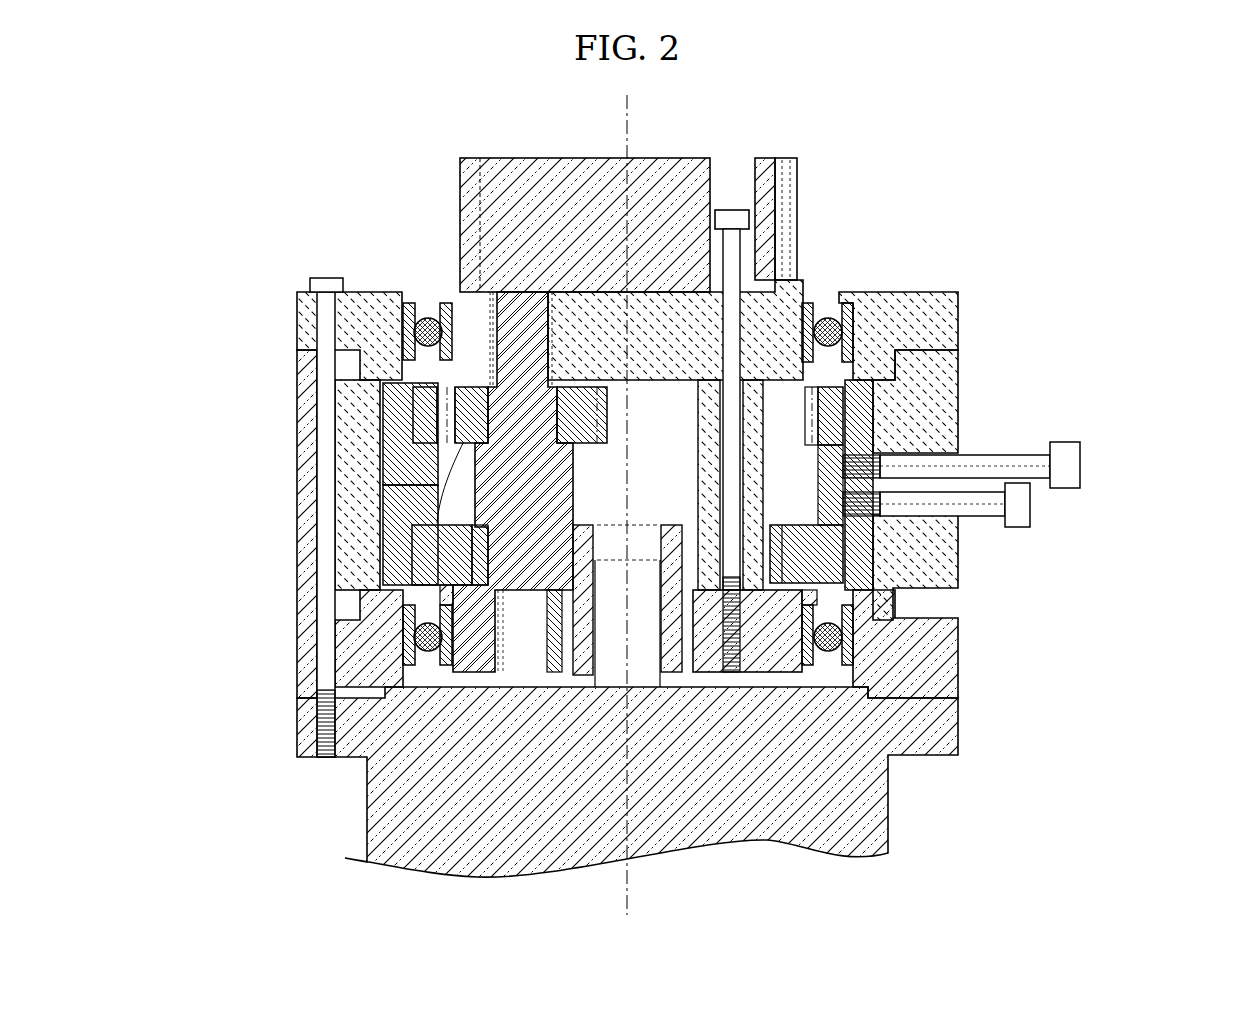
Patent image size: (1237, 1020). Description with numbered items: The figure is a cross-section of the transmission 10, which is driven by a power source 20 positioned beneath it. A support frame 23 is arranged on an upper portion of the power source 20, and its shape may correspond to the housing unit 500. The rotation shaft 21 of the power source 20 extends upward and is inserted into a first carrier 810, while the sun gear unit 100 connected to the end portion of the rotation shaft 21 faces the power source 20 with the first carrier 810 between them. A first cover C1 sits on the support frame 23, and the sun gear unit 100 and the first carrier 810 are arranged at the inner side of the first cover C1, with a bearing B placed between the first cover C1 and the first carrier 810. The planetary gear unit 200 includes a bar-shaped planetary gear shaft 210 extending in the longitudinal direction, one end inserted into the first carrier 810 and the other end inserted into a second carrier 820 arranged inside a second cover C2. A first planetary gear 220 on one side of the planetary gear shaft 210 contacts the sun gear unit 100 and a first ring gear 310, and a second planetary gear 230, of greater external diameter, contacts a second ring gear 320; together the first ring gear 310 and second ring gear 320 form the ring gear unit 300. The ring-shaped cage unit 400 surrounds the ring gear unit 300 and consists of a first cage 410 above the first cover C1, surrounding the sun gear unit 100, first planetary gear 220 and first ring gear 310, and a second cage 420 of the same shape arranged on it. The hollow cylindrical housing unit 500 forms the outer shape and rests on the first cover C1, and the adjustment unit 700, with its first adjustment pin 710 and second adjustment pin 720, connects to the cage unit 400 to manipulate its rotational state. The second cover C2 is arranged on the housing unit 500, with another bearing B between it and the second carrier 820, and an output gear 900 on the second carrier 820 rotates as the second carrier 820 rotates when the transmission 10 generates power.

The transmission 10 is at (1090, 245).
The power source 20 is at (665, 782).
The rotation shaft 21 is at (643, 640).
The support frame 23 is at (950, 727).
The sun gear unit 100 is at (587, 512).
The planetary gear unit 200 is at (377, 528).
The planetary gear shaft 210 is at (440, 626).
The first planetary gear 220 is at (397, 575).
The second planetary gear 230 is at (435, 557).
The ring gear unit 300 is at (966, 474).
The first ring gear 310 is at (830, 550).
The second ring gear 320 is at (830, 410).
The cage unit 400 is at (293, 484).
The first cage 410 is at (397, 510).
The second cage 420 is at (403, 463).
The housing unit 500 is at (948, 582).
The adjustment unit 700 is at (1032, 486).
The first adjustment pin 710 is at (1032, 505).
The second adjustment pin 720 is at (1082, 465).
The first carrier 810 is at (477, 655).
The second carrier 820 is at (757, 326).
The output gear 900 is at (790, 156).
The bearing B is at (843, 302).
The first cover C1 is at (948, 665).
The second cover C2 is at (948, 320).